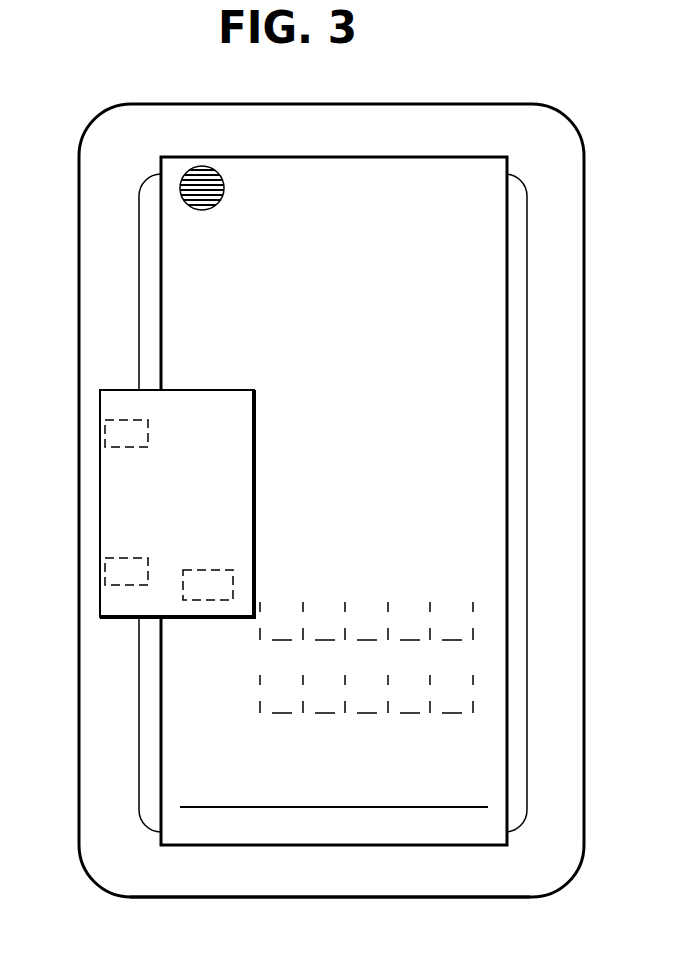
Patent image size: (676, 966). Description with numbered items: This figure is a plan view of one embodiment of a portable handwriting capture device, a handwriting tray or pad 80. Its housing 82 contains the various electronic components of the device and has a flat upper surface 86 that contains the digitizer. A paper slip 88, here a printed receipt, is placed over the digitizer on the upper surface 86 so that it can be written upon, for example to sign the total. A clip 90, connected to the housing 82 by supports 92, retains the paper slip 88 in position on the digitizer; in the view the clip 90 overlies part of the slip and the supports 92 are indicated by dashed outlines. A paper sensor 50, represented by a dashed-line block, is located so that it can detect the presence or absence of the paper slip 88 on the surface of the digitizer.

The paper sensor 50 is at (183, 598).
The handwriting tray or pad 80 is at (362, 533).
The housing 82 is at (580, 580).
The flat upper surface 86 is at (495, 883).
The paper slip 88 is at (436, 157).
The clip 90 is at (118, 390).
The supports 92 is at (97, 443).